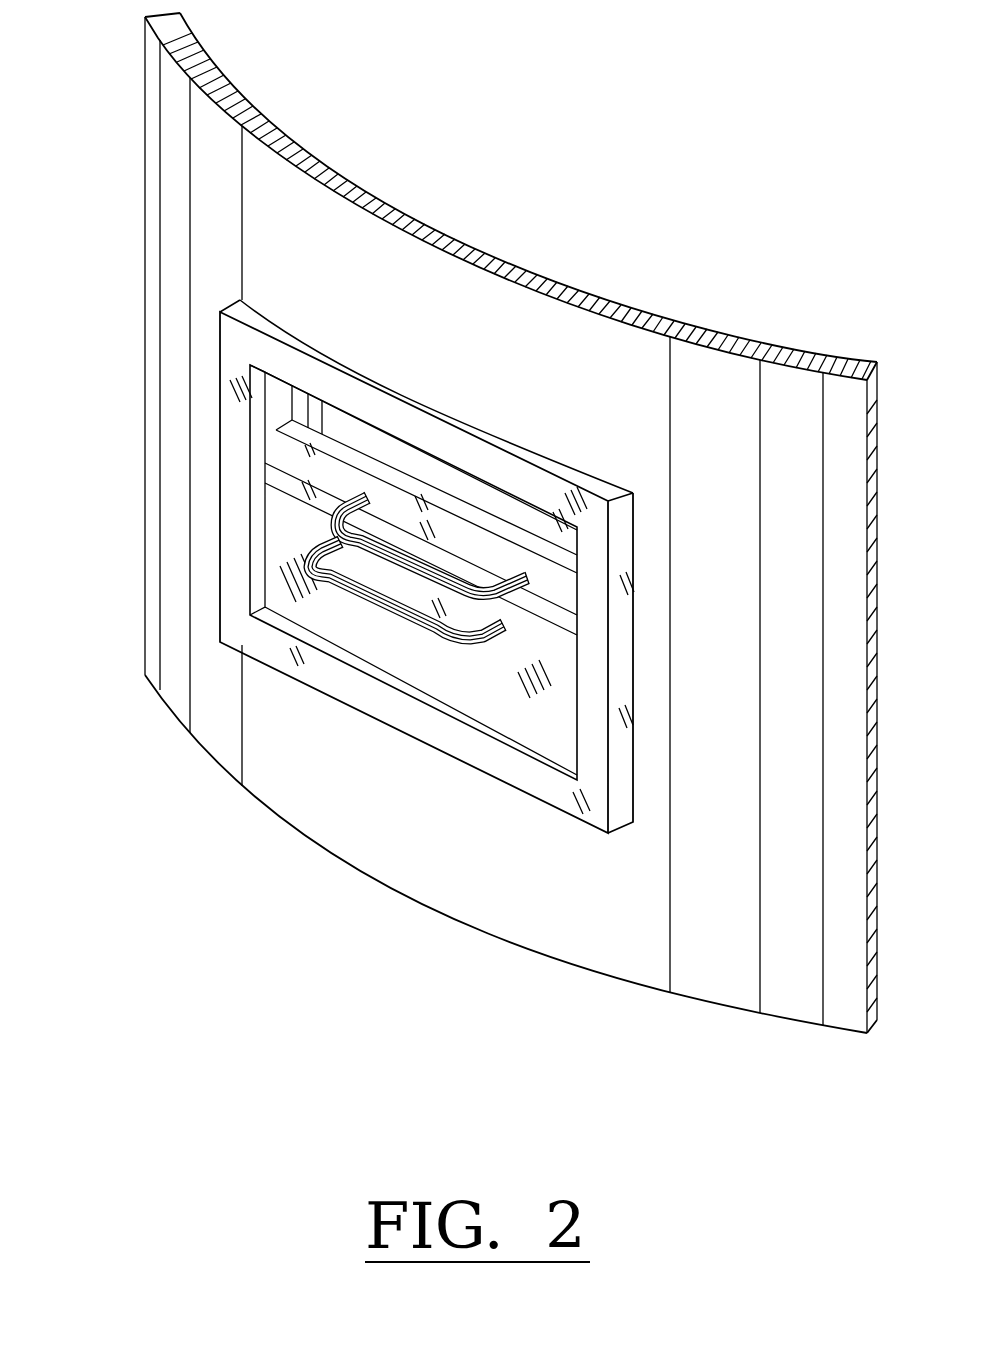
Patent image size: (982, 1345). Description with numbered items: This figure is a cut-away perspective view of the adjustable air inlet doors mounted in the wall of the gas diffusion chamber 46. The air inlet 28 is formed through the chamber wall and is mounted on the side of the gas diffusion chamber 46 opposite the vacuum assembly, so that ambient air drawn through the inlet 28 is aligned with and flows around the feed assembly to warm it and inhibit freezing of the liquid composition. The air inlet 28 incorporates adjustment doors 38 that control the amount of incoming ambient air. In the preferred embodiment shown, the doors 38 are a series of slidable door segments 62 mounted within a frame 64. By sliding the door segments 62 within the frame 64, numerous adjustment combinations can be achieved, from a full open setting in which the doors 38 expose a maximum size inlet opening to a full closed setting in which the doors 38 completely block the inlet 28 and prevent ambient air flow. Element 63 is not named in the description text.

The gas diffusion chamber 46 is at (278, 90).
The adjustment doors 38 is at (300, 702).
The air inlet 28 is at (372, 433).
The slidable door segments 62 is at (525, 548).
The tubes 63 is at (420, 560).
The frame 64 is at (625, 543).